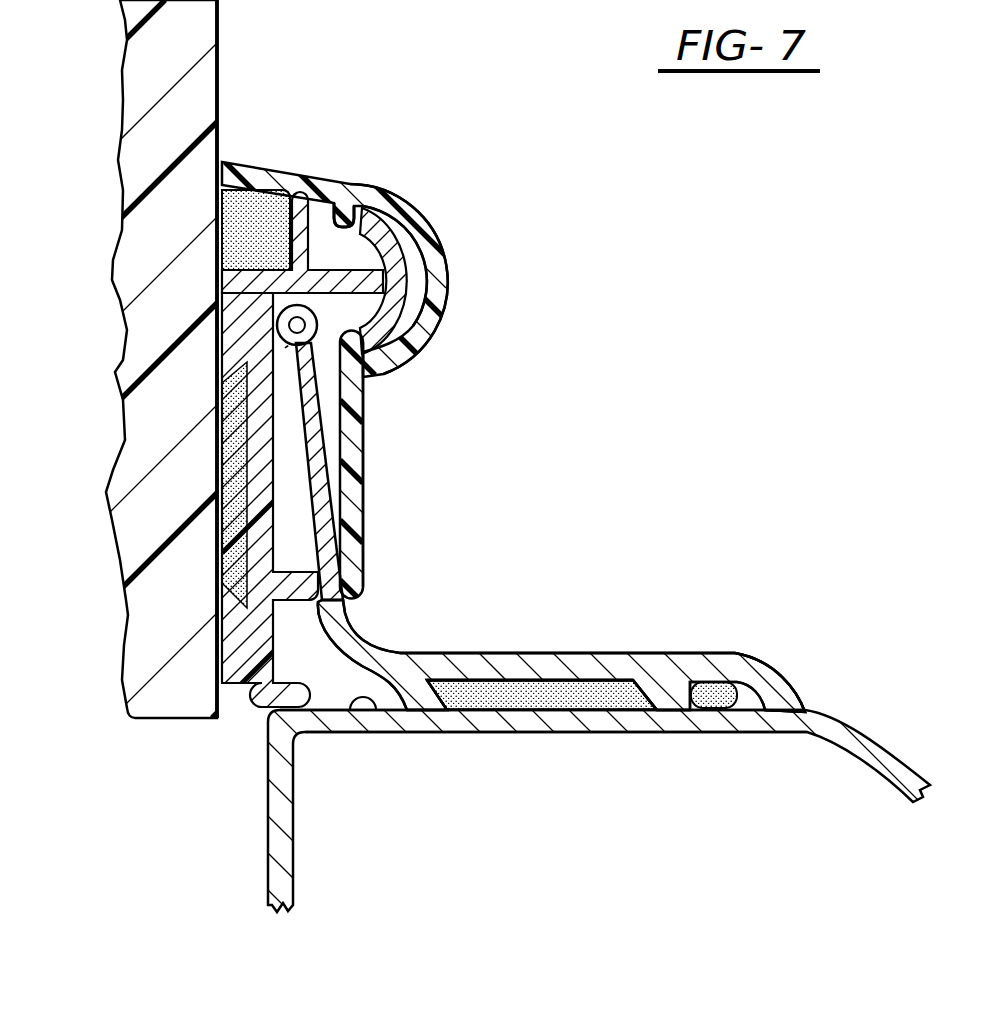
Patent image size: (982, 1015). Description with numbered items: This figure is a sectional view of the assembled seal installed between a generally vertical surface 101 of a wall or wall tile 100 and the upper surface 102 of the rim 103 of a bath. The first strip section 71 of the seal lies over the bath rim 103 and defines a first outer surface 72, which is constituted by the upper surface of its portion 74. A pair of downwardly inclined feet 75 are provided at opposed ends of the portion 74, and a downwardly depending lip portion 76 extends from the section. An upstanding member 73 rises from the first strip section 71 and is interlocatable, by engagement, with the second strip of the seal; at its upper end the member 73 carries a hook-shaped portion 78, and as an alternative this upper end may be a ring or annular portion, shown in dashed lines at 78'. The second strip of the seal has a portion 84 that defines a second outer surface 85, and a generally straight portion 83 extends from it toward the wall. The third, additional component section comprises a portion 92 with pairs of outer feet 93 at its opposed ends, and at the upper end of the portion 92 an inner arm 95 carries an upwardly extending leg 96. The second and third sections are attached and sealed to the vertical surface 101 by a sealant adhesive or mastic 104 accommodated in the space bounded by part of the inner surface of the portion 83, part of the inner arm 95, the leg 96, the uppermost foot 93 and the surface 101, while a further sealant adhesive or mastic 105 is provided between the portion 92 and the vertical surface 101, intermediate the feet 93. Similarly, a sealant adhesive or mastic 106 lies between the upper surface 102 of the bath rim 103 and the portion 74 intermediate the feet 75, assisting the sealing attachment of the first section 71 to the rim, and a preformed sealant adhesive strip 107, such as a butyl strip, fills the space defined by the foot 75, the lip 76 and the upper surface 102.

The first strip section 71 is at (712, 624).
The first outer surface 72 is at (530, 652).
The upstanding member 73 is at (320, 515).
The portion 74 is at (487, 668).
The downwardly inclined feet 75 is at (417, 693).
The lip portion 76 is at (760, 679).
The hook-shaped portion 78 is at (389, 281).
The ring or annular portion 78' is at (367, 373).
The straight portion 83 is at (280, 178).
The portion 84 is at (353, 435).
The second outer surface 85 is at (357, 487).
The portion 92 is at (253, 455).
The outer feet 93 is at (228, 283).
The inner arm 95 is at (335, 272).
The upwardly extending leg 96 is at (302, 239).
The wall or wall tile 100 is at (111, 373).
The vertical surface 101 is at (219, 64).
The upper surface of the rim 102 is at (833, 715).
The bath rim 103 is at (567, 721).
The sealant adhesive or mastic 104 is at (247, 223).
The sealant adhesive or mastic 105 is at (243, 537).
The sealant adhesive or mastic 106 is at (603, 693).
The preformed sealant adhesive strip 107 is at (720, 700).